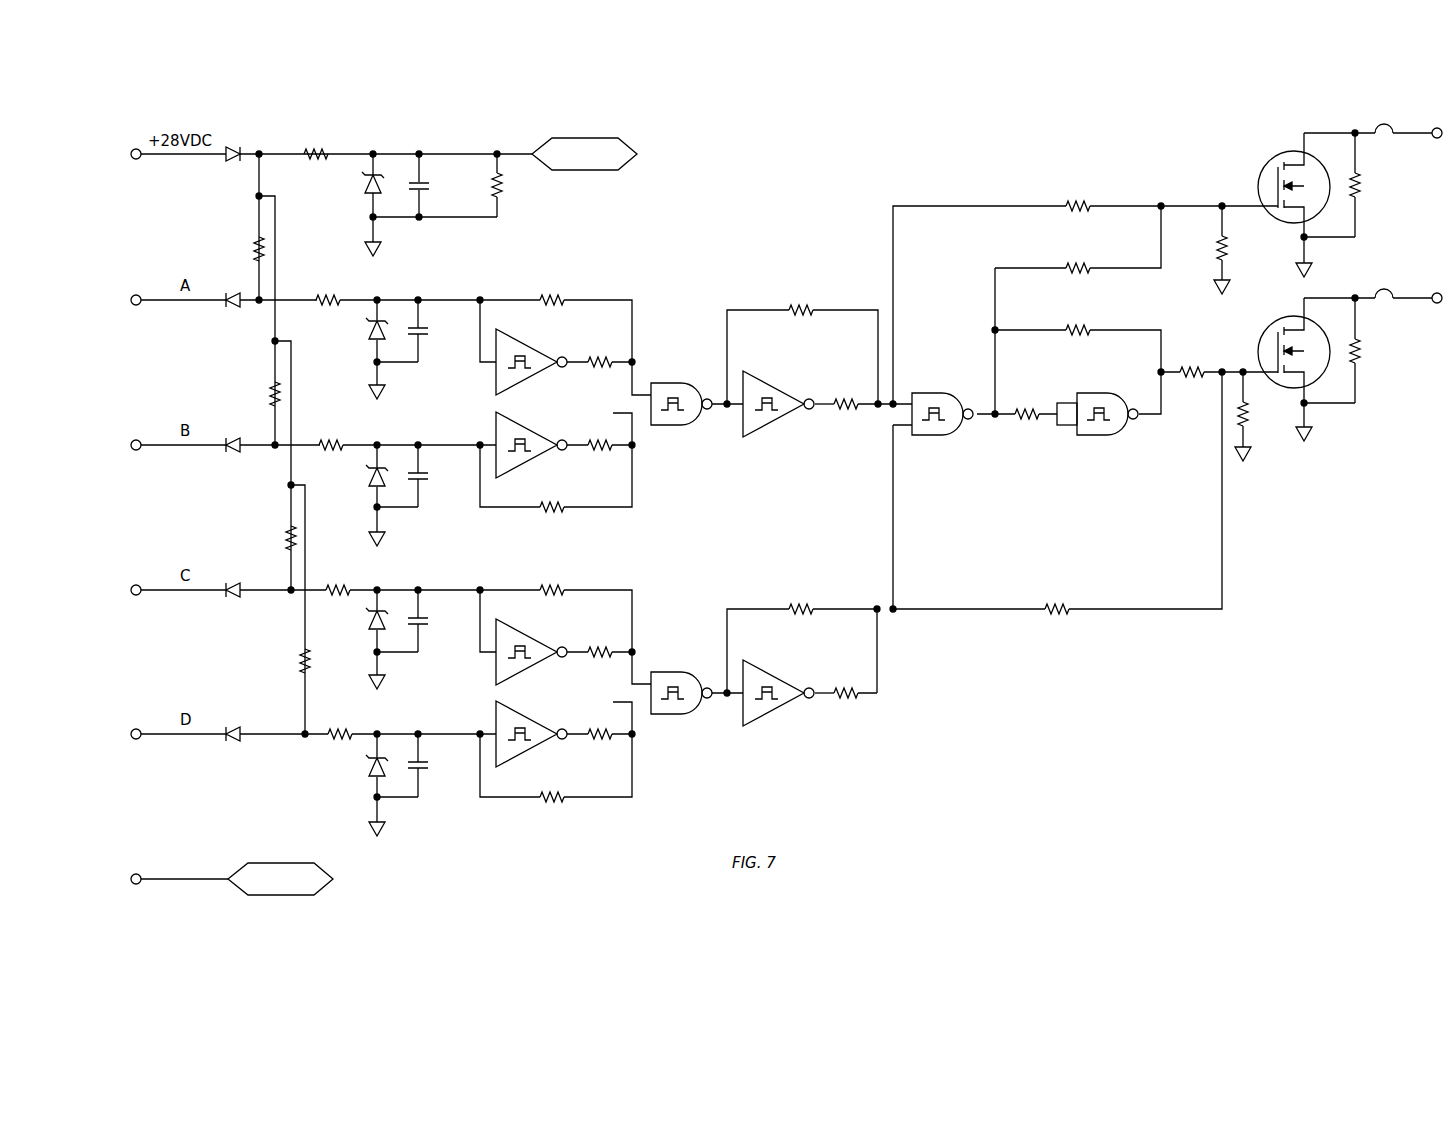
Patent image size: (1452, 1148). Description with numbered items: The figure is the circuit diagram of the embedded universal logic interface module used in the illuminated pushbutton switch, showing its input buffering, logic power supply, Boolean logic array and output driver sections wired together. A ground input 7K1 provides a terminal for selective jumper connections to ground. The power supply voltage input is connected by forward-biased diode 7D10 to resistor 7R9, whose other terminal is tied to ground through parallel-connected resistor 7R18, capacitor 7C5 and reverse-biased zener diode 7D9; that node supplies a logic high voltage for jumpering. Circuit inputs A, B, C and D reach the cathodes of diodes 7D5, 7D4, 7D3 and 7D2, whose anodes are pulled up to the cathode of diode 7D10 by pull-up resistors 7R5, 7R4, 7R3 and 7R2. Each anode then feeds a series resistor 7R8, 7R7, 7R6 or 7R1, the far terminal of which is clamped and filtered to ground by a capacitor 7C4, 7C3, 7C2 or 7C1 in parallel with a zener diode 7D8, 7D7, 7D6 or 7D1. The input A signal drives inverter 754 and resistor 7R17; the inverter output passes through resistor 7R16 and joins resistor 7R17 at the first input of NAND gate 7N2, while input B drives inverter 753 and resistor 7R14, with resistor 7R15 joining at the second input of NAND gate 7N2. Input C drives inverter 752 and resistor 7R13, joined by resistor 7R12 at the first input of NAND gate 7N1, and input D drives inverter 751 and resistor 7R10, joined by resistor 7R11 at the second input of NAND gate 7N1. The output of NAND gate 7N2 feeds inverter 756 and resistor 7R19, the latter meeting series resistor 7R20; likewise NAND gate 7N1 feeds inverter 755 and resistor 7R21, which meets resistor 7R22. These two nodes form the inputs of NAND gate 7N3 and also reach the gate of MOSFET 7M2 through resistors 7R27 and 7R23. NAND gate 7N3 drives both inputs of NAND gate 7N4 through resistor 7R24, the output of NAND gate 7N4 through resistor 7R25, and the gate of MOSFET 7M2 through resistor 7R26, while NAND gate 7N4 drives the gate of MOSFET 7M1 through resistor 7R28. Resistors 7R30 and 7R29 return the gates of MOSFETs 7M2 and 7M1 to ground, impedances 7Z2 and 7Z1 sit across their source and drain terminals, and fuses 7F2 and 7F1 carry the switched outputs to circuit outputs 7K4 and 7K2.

The resistor 7R1 is at (342, 725).
The pull-up resistor 7R2 is at (289, 661).
The pull-up resistor 7R3 is at (274, 538).
The pull-up resistor 7R4 is at (257, 394).
The pull-up resistor 7R5 is at (243, 249).
The resistor 7R6 is at (339, 581).
The resistor 7R7 is at (333, 436).
The resistor 7R8 is at (328, 291).
The resistor 7R9 is at (319, 145).
The resistor 7R10 is at (554, 787).
The resistor 7R11 is at (601, 724).
The resistor 7R12 is at (601, 642).
The resistor 7R13 is at (555, 581).
The resistor 7R14 is at (554, 497).
The resistor 7R15 is at (601, 435).
The resistor 7R16 is at (601, 352).
The resistor 7R17 is at (555, 291).
The resistor 7R18 is at (519, 185).
The resistor 7R19 is at (801, 300).
The resistor 7R20 is at (848, 394).
The resistor 7R21 is at (801, 599).
The resistor 7R22 is at (848, 683).
The resistor 7R23 is at (1059, 599).
The resistor 7R24 is at (1027, 404).
The resistor 7R25 is at (1079, 320).
The resistor 7R26 is at (1079, 258).
The resistor 7R27 is at (1079, 196).
The resistor 7R28 is at (1191, 362).
The resistor 7R29 is at (1263, 416).
The resistor 7R30 is at (1242, 250).
The capacitor 7C1 is at (437, 765).
The capacitor 7C2 is at (437, 621).
The capacitor 7C3 is at (437, 476).
The capacitor 7C4 is at (437, 331).
The capacitor 7C5 is at (438, 185).
The zener diode 7D1 is at (360, 785).
The diode 7D2 is at (234, 747).
The diode 7D3 is at (234, 603).
The diode 7D4 is at (234, 458).
The diode 7D5 is at (234, 313).
The zener diode 7D6 is at (360, 639).
The zener diode 7D7 is at (360, 495).
The zener diode 7D8 is at (360, 349).
The zener diode 7D9 is at (356, 205).
The diode 7D10 is at (235, 169).
The NAND gate 7N1 is at (681, 682).
The NAND gate 7N2 is at (681, 393).
The NAND gate 7N3 is at (942, 403).
The NAND gate 7N4 is at (1097, 403).
The MOSFET 7M1 is at (1277, 350).
The MOSFET 7M2 is at (1277, 185).
The impedance 7Z1 is at (1372, 350).
The impedance 7Z2 is at (1372, 185).
The fuse 7F1 is at (1389, 285).
The fuse 7F2 is at (1389, 120).
The ground input 7K1 is at (232, 876).
The circuit output 7K2 is at (1437, 288).
The circuit output 7K4 is at (1437, 123).
The inverter 751 is at (532, 746).
The inverter 752 is at (522, 674).
The inverter 753 is at (532, 457).
The inverter 754 is at (522, 384).
The inverter 755 is at (782, 673).
The inverter 756 is at (773, 380).